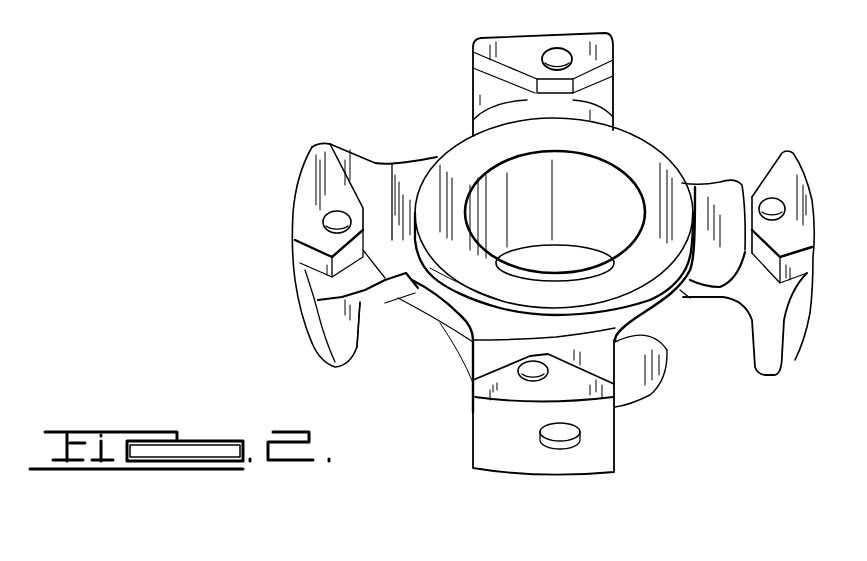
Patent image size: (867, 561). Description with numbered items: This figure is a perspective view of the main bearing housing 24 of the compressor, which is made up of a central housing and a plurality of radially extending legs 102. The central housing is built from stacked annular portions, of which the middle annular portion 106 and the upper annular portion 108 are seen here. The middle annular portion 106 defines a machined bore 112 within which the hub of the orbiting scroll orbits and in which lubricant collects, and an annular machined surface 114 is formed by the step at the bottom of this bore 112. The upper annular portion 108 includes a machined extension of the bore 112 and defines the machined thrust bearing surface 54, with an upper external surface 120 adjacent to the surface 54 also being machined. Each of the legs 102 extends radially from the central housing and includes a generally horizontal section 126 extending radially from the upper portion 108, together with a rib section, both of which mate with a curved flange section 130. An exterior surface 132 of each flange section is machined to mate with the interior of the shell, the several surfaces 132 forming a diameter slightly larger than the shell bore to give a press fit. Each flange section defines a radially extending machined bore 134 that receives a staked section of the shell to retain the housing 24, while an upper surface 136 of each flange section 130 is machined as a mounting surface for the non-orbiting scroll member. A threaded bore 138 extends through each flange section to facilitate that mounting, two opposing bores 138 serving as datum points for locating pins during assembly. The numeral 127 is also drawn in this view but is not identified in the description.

The main bearing housing 24 is at (438, 76).
The machined thrust bearing surface 54 is at (617, 157).
The legs 102 is at (390, 165).
The middle annular portion 106 is at (637, 385).
The upper annular portion 108 is at (453, 303).
The machined bore 112 is at (606, 206).
The annular machined surface 114 is at (535, 262).
The upper external surface 120 is at (505, 322).
The generally horizontal section 126 is at (387, 303).
The flange lower face 127 is at (395, 232).
The curved flange section 130 is at (338, 343).
The exterior surface 132 is at (790, 337).
The radially extending machined bore 134 is at (560, 444).
The upper surface 136 is at (307, 192).
The threaded bore 138 is at (340, 222).